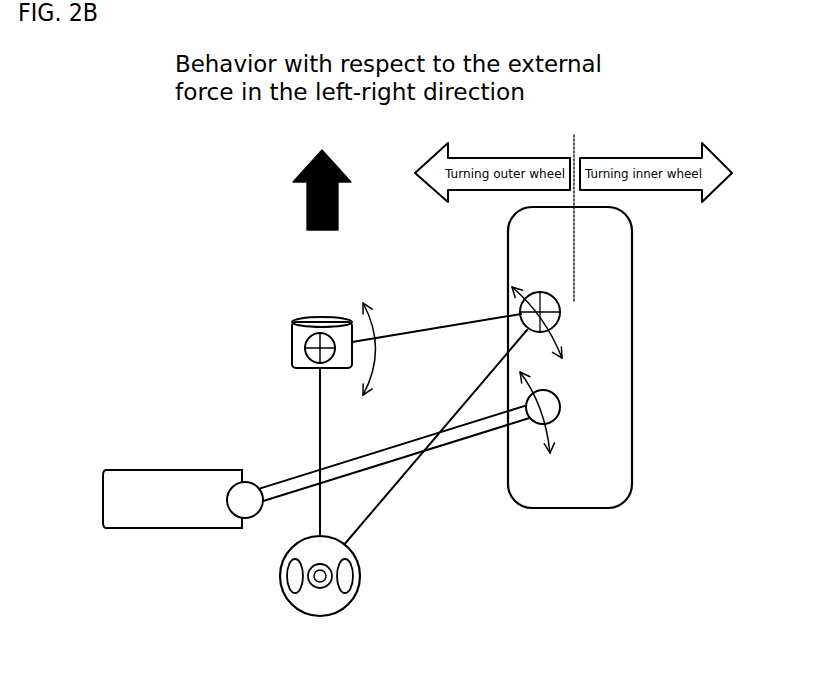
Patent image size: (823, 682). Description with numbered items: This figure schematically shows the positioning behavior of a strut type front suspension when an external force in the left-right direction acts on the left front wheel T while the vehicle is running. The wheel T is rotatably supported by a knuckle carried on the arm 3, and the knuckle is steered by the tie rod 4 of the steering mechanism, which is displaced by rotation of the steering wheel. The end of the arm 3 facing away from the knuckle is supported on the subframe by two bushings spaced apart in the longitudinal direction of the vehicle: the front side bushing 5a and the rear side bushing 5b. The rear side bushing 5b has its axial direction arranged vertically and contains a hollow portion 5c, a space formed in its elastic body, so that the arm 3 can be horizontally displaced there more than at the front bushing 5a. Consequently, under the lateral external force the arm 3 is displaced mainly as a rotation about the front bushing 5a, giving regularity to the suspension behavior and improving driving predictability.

The arm 3 is at (390, 493).
The tie rod 4 is at (292, 472).
The front side bushing 5a is at (300, 342).
The rear side bushing 5b is at (283, 590).
The hollow portion 5c is at (348, 577).
The left front wheel T is at (507, 258).
The external force F is at (322, 177).